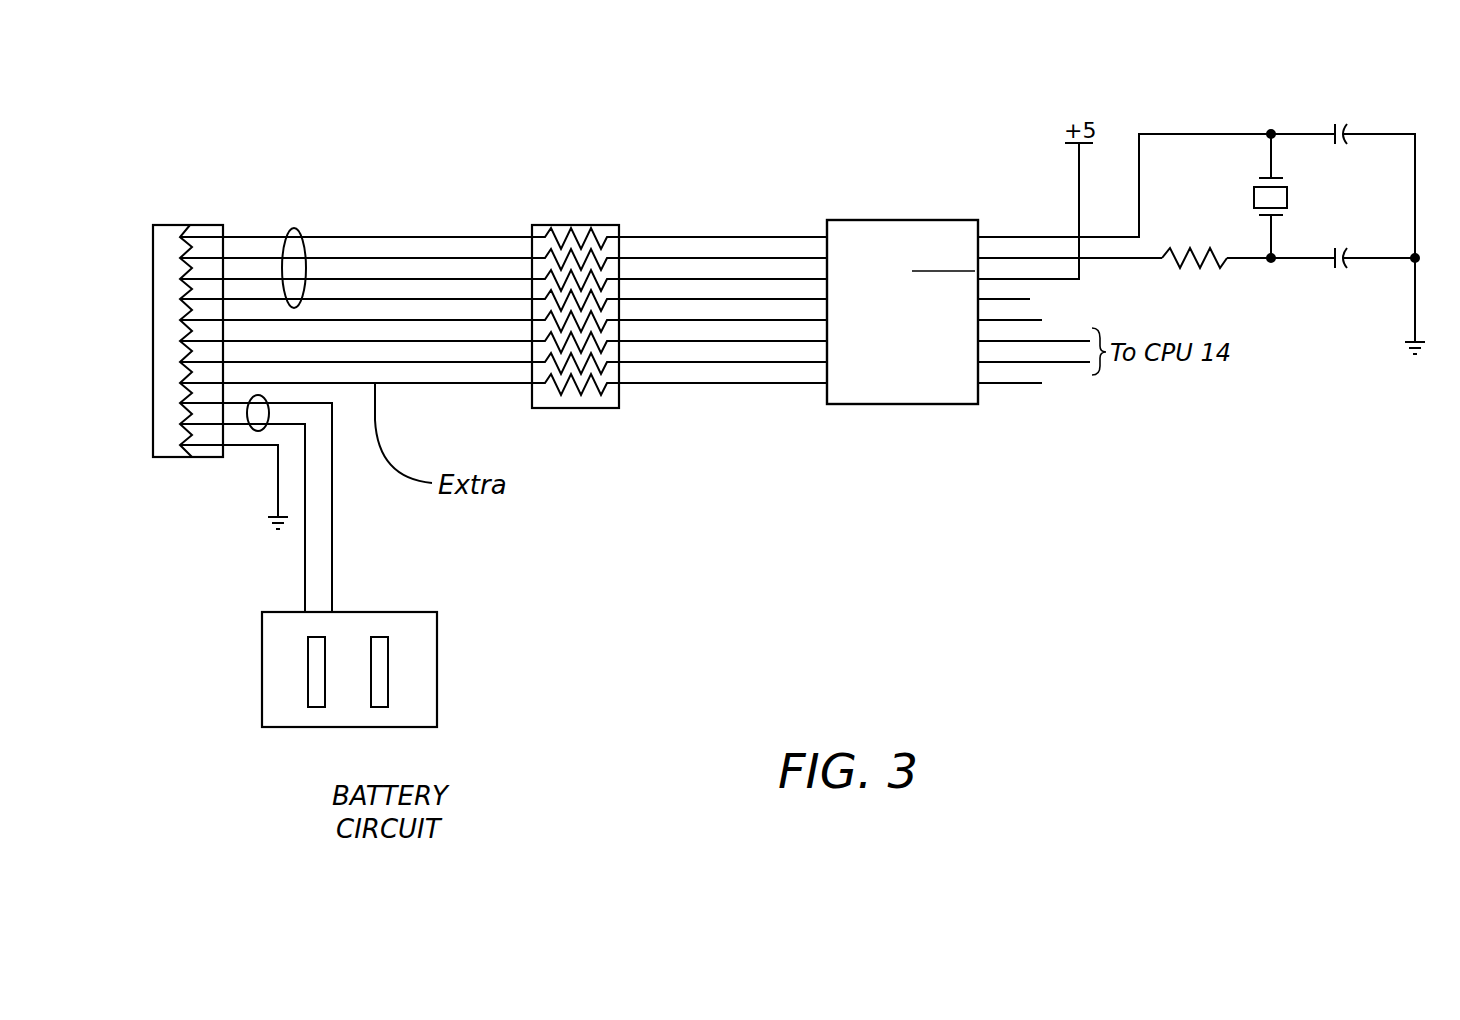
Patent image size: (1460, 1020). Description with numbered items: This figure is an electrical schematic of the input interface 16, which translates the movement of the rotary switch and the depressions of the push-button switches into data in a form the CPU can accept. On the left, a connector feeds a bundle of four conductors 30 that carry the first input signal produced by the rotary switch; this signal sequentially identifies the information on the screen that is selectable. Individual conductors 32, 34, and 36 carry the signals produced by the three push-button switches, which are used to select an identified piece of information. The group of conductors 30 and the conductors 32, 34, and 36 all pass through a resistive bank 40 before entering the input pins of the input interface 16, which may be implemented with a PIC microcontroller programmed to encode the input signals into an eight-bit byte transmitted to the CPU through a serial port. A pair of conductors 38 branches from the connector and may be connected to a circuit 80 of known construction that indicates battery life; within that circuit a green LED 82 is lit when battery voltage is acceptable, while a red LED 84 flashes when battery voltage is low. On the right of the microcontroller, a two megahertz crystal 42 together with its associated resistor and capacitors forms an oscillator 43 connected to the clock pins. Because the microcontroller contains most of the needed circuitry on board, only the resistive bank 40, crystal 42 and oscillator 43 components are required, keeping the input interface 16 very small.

The input interface 16 is at (876, 214).
The four conductors 30 is at (298, 229).
The conductor 32 is at (437, 320).
The conductor 34 is at (487, 341).
The conductor 36 is at (428, 362).
The pair of conductors 38 is at (260, 431).
The resistive bank 40 is at (585, 225).
The crystal 42 is at (1287, 202).
The oscillator 43 is at (1375, 122).
The circuit 80 is at (350, 727).
The green LED 82 is at (308, 674).
The red LED 84 is at (388, 674).